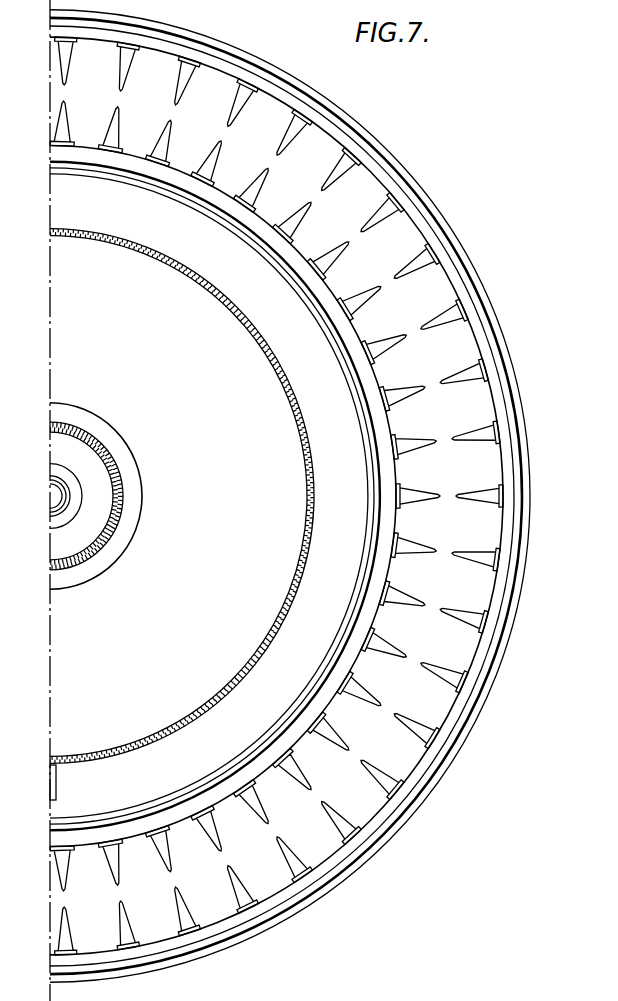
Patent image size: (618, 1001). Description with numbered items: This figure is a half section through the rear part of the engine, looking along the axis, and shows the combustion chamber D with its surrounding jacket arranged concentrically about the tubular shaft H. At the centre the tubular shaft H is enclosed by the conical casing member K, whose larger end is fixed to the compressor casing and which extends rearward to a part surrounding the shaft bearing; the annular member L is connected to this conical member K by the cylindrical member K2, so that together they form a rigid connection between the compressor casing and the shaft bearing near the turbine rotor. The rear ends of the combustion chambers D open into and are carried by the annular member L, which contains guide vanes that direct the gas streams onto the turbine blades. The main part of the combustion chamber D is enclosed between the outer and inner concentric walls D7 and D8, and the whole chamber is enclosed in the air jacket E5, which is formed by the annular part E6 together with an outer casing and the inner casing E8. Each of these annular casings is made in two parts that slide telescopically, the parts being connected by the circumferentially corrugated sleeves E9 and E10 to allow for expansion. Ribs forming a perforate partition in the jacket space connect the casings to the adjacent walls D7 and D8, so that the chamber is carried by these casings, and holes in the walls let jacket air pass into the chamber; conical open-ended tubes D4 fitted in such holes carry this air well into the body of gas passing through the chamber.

The combustion chamber D is at (480, 403).
The conical open-ended tube D4 is at (312, 790).
The outer concentric wall D7 is at (493, 596).
The inner concentric wall D8 is at (404, 338).
The air jacket E5 is at (520, 470).
The annular part E6 is at (493, 346).
The inner casing E8 is at (345, 660).
The corrugated sleeve E9 is at (525, 553).
The corrugated sleeve E10 is at (372, 497).
The tubular shaft H is at (83, 560).
The conical casing member K is at (133, 742).
The cylindrical member K2 is at (56, 776).
The annular member L is at (145, 224).